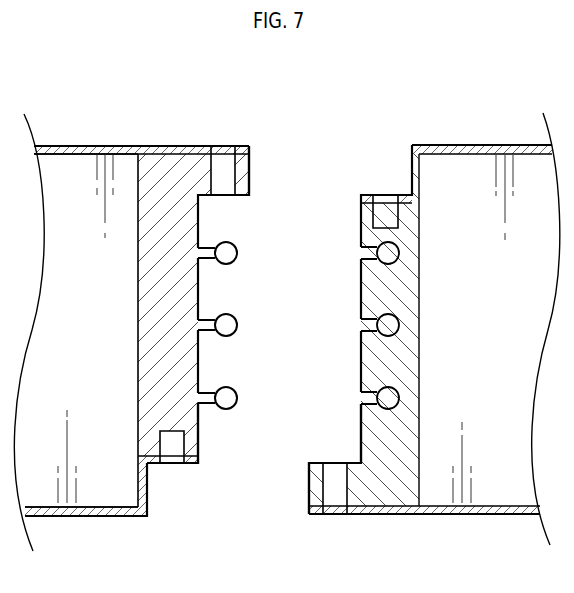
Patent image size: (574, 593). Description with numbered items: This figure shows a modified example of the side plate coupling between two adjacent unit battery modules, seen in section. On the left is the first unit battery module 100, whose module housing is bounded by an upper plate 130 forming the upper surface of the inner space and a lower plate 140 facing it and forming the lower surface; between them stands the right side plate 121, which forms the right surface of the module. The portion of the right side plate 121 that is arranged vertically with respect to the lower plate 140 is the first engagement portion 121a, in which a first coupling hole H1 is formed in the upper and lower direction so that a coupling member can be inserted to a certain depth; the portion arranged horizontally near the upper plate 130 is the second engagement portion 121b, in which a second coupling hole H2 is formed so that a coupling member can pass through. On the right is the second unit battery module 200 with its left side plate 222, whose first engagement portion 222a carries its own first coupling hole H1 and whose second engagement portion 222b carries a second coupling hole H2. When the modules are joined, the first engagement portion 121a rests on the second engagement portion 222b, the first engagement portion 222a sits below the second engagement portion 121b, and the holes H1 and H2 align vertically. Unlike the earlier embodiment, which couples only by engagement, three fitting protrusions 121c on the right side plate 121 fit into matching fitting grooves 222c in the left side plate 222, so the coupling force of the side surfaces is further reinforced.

The first unit battery module 100 is at (72, 178).
The upper plate 130 is at (120, 146).
The lower plate 140 is at (96, 516).
The right side plate 121 is at (178, 178).
The first engagement portion 121a is at (198, 426).
The second engagement portion 121b is at (248, 176).
The fitting protrusion 121c is at (237, 254).
The first coupling hole H1 is at (172, 447).
The second coupling hole H2 is at (223, 165).
The second unit battery module 200 is at (473, 177).
The left side plate 222 is at (387, 478).
The first engagement portion 222a is at (361, 432).
The second engagement portion 222b is at (309, 483).
The fitting groove 222c is at (388, 254).